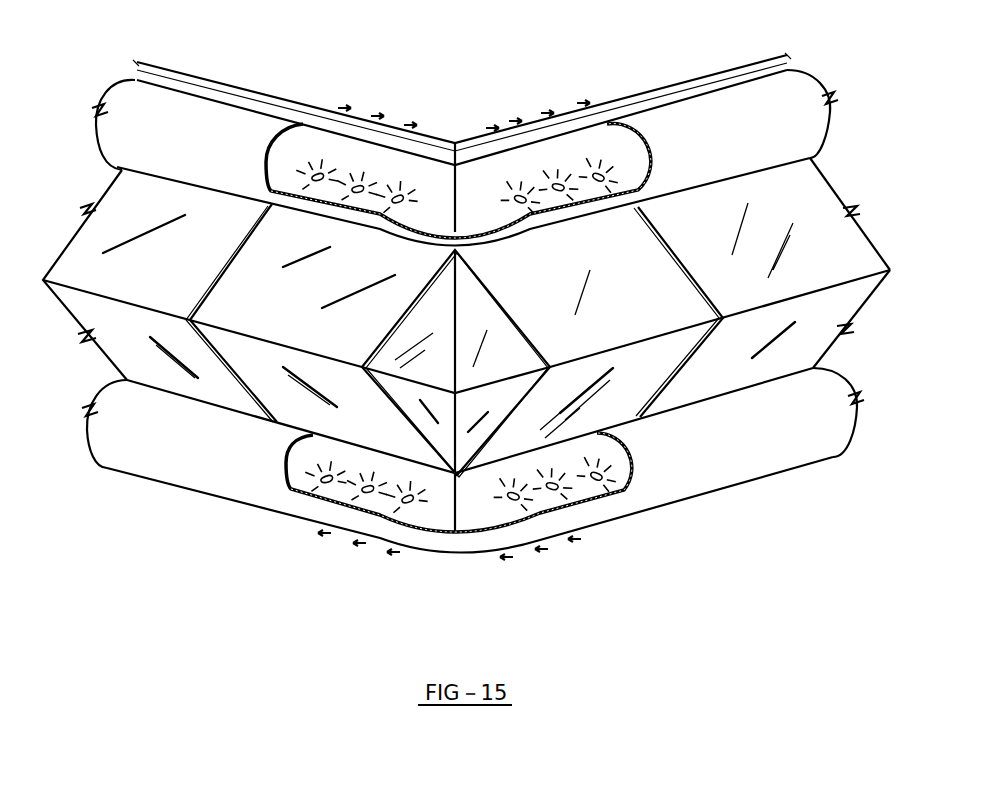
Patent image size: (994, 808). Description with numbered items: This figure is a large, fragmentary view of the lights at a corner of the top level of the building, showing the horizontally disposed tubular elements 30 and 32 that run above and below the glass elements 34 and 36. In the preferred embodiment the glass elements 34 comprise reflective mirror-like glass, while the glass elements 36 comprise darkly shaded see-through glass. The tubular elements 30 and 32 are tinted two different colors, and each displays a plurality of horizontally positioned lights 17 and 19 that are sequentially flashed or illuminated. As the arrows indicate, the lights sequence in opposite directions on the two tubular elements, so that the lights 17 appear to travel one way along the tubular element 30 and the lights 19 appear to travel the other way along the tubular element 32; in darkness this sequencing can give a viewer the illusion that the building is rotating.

The horizontally positioned lights 17 is at (393, 233).
The horizontally positioned lights 19 is at (406, 506).
The tubular element 30 is at (793, 98).
The tubular element 32 is at (728, 457).
The glass element 34 is at (808, 207).
The glass element 36 is at (807, 342).